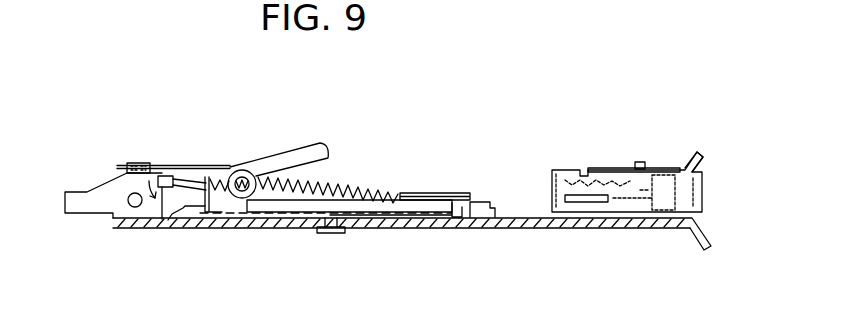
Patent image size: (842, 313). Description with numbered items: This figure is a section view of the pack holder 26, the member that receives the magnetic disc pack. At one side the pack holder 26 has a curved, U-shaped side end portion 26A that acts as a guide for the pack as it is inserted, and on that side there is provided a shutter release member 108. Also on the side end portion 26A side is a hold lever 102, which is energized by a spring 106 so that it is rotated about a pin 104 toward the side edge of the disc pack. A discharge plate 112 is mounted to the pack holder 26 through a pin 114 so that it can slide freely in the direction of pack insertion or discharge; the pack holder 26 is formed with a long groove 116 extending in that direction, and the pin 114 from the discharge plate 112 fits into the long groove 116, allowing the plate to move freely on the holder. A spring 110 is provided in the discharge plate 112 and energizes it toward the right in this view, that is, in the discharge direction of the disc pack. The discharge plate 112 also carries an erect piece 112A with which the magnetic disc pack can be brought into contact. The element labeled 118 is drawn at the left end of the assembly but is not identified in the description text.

The head base block 118 is at (95, 195).
The spring 110 is at (343, 186).
The shutter release member 108 is at (442, 192).
The discharge plate 112 is at (390, 214).
The erect piece 112A is at (218, 222).
The pin 114 is at (333, 234).
The pack holder 26 is at (533, 226).
The long groove 116 is at (290, 228).
The hold lever 102 is at (577, 195).
The spring 106 is at (598, 162).
The pin 104 is at (655, 160).
The side end portion 26A is at (682, 168).